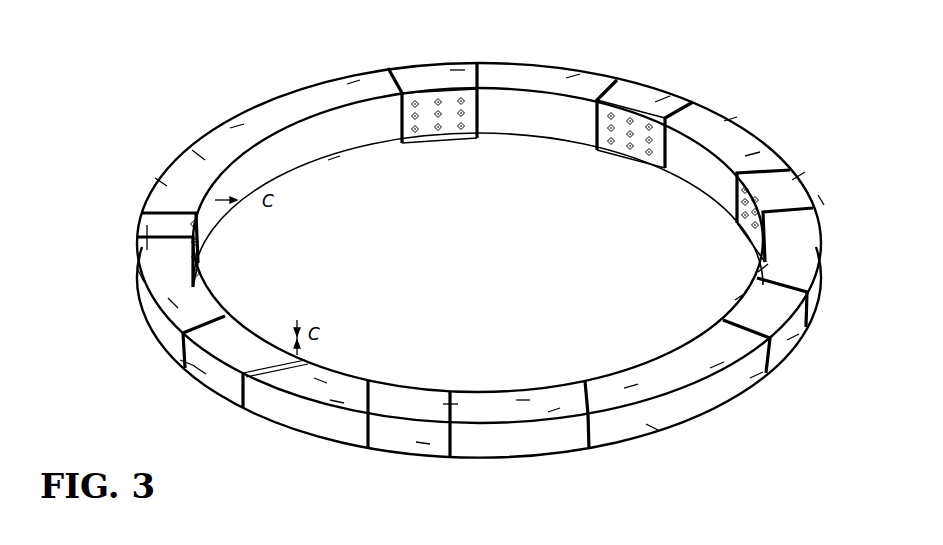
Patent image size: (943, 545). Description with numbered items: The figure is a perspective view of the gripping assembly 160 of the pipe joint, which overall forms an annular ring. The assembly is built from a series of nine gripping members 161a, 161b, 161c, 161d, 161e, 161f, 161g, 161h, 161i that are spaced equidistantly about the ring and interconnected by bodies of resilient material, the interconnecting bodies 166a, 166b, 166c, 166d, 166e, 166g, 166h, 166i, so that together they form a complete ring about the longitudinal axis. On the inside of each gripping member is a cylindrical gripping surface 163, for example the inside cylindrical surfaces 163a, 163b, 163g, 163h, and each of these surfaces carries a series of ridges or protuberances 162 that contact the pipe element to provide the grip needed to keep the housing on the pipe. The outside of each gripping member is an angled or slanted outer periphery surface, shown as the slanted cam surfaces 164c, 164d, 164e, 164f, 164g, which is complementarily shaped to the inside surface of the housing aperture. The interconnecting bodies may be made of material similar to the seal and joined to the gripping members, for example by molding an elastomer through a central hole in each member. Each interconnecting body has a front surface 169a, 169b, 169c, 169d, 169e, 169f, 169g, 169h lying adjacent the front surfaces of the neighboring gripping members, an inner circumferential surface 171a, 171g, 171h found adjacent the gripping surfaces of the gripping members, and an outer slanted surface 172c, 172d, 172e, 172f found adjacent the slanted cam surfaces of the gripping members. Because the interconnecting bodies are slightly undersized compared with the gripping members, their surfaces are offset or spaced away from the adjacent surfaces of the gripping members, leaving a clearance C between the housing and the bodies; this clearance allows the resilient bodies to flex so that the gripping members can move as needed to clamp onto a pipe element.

The gripping assembly 160 is at (634, 63).
The gripping member 161a is at (662, 100).
The gripping member 161b is at (798, 177).
The gripping member 161c is at (740, 297).
The gripping member 161d is at (630, 385).
The gripping member 161e is at (450, 407).
The gripping member 161f is at (187, 365).
The gripping member 161g is at (150, 240).
The gripping member 161h is at (237, 128).
The gripping member 161i is at (457, 67).
The ridges or protuberances 162 is at (296, 122).
The gripping surface 163 is at (475, 105).
The inside cylindrical surface 163a is at (593, 127).
The inside cylindrical surface 163b is at (750, 218).
The inside cylindrical surface 163g is at (203, 275).
The inside cylindrical surface 163h is at (325, 175).
The slanted outer periphery surface 164c is at (793, 337).
The slanted outer periphery surface 164d is at (652, 427).
The slanted outer periphery surface 164e is at (423, 443).
The slanted outer periphery surface 164f is at (200, 370).
The slanted outer periphery surface 164g is at (140, 275).
The interconnecting body 166a is at (752, 155).
The interconnecting body 166b is at (822, 200).
The interconnecting body 166c is at (757, 377).
The interconnecting body 166d is at (553, 413).
The interconnecting body 166e is at (337, 403).
The interconnecting body 166g is at (197, 155).
The interconnecting body 166h is at (333, 160).
The interconnecting body 166i is at (573, 77).
The front surface of interconnecting body 169a is at (730, 120).
The front surface of interconnecting body 169b is at (763, 268).
The front surface of interconnecting body 169c is at (717, 367).
The front surface of interconnecting body 169d is at (523, 403).
The front surface of interconnecting body 169e is at (320, 380).
The front surface of interconnecting body 169f is at (173, 303).
The front surface of interconnecting body 169g is at (160, 182).
The front surface of interconnecting body 169h is at (353, 83).
The inner circumferential surface of interconnecting body 171a is at (690, 150).
The inner circumferential surface of interconnecting body 171g is at (200, 180).
The inner circumferential surface of interconnecting body 171h is at (375, 133).
The outer slanted surface of interconnecting body 172c is at (692, 403).
The outer slanted surface of interconnecting body 172d is at (550, 457).
The outer slanted surface of interconnecting body 172e is at (300, 427).
The outer slanted surface of interconnecting body 172f is at (178, 343).